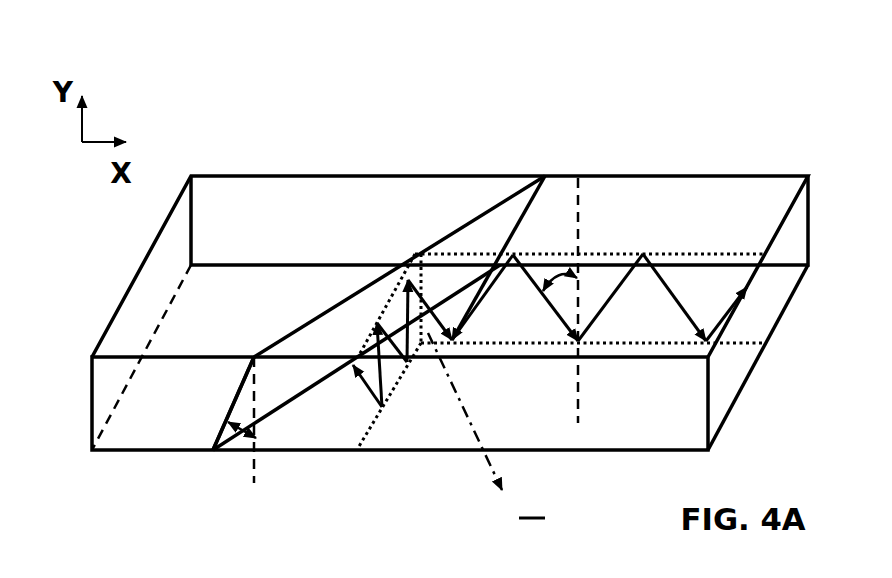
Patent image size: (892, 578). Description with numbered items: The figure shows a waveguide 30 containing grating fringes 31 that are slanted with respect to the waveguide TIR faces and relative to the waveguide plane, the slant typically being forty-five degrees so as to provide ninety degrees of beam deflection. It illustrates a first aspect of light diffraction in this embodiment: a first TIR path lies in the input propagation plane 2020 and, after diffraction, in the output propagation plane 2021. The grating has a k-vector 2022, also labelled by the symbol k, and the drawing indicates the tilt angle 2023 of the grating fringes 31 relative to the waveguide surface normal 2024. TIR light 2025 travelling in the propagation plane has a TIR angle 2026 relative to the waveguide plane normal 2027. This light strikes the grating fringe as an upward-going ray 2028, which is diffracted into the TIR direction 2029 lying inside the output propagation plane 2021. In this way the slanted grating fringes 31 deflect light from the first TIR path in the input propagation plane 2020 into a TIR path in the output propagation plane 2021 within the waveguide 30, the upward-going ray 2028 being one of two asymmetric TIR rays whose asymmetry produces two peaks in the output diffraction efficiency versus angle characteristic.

The waveguide 30 is at (218, 175).
The grating fringes 31 is at (230, 426).
The input propagation plane 2020 is at (625, 252).
The output propagation plane 2021 is at (372, 412).
The grating k-vector 2022 is at (483, 457).
The tilt angle 2023 is at (250, 434).
The waveguide surface normal 2024 is at (252, 475).
The TIR light 2025 is at (667, 283).
The TIR angle 2026 is at (560, 277).
The waveguide plane normal 2027 is at (580, 177).
The upward-going ray 2028 is at (442, 340).
The TIR direction 2029 is at (402, 337).